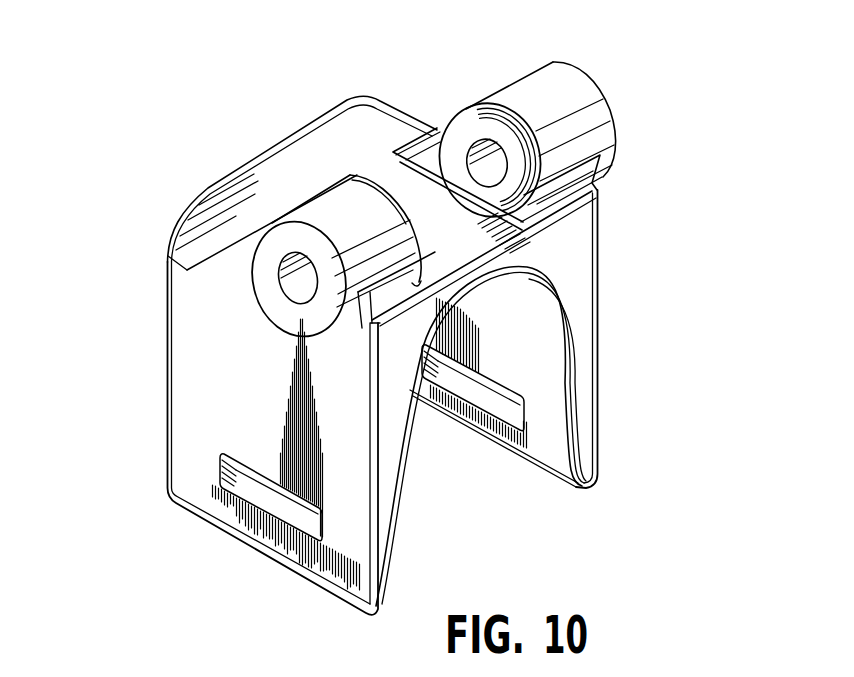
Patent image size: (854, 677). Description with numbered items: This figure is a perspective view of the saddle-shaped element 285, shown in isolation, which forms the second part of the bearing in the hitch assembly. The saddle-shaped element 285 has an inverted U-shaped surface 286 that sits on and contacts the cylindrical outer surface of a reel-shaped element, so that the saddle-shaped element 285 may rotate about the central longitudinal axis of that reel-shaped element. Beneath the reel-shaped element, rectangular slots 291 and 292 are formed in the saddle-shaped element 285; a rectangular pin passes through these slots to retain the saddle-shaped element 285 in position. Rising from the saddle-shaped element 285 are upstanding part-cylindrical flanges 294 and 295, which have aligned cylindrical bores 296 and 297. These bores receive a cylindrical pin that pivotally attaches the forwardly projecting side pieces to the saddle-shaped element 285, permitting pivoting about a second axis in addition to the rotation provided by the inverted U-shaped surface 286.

The saddle-shaped element 285 is at (188, 393).
The inverted U-shaped surface 286 is at (523, 333).
The rectangular slot 291 is at (297, 520).
The rectangular slot 292 is at (503, 400).
The upstanding part-cylindrical flange 294 is at (332, 197).
The upstanding part-cylindrical flange 295 is at (548, 68).
The cylindrical bore 296 is at (297, 290).
The cylindrical bore 297 is at (487, 163).